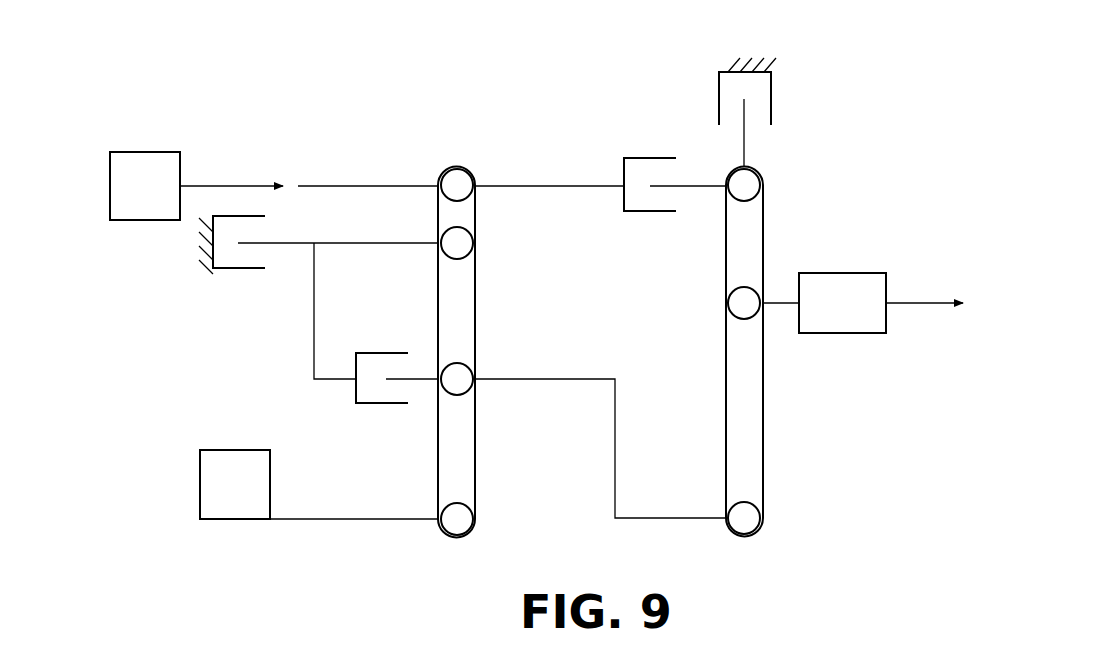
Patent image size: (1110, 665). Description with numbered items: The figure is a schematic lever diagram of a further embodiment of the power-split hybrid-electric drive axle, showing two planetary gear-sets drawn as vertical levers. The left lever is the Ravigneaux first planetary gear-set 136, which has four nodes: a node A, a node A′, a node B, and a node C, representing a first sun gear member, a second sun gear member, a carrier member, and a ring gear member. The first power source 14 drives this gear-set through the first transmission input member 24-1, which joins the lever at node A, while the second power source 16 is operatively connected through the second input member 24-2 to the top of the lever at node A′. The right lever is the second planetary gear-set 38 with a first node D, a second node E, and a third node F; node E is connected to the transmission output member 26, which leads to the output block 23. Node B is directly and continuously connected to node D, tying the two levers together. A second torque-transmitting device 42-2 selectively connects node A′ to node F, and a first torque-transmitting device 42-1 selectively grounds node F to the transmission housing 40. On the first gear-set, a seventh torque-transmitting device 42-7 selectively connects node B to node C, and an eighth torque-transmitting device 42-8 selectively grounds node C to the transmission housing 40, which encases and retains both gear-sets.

The second power source 16 is at (110, 186).
The transmission housing 40 is at (213, 268).
The eighth torque-transmitting device 42-8 is at (240, 268).
The second input member 24-2 is at (365, 186).
The seventh torque-transmitting device 42-7 is at (364, 403).
The Ravigneaux first planetary gear-set 136 is at (516, 478).
The second node A' A′ is at (473, 181).
The node C is at (455, 260).
The node B is at (470, 366).
The node A is at (447, 531).
The first power source 14 is at (200, 510).
The first transmission input member 24-1 is at (330, 519).
The second torque-transmitting device 42-2 is at (630, 211).
The first torque-transmitting device 42-1 is at (771, 99).
The second planetary gear-set 38 is at (792, 398).
The third node F is at (758, 172).
The second node E is at (760, 315).
The first node D is at (762, 510).
The transmission output member 26 is at (779, 303).
The output station 23 is at (886, 326).